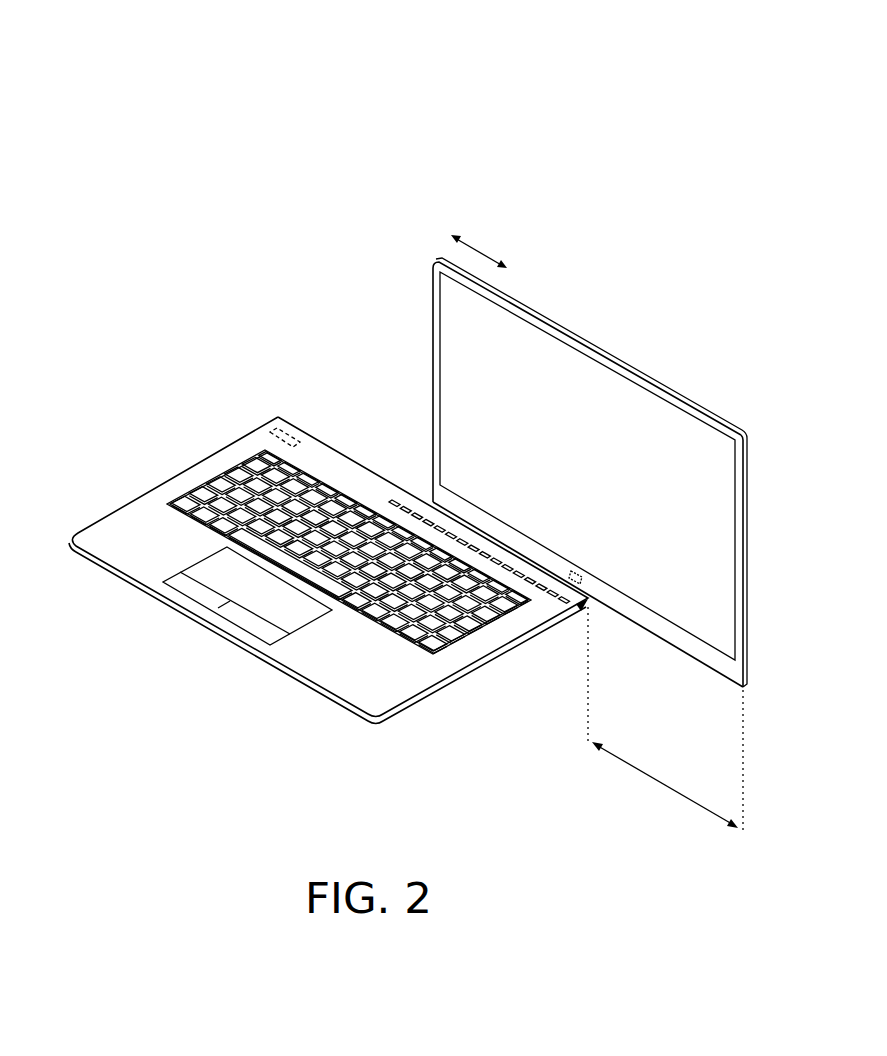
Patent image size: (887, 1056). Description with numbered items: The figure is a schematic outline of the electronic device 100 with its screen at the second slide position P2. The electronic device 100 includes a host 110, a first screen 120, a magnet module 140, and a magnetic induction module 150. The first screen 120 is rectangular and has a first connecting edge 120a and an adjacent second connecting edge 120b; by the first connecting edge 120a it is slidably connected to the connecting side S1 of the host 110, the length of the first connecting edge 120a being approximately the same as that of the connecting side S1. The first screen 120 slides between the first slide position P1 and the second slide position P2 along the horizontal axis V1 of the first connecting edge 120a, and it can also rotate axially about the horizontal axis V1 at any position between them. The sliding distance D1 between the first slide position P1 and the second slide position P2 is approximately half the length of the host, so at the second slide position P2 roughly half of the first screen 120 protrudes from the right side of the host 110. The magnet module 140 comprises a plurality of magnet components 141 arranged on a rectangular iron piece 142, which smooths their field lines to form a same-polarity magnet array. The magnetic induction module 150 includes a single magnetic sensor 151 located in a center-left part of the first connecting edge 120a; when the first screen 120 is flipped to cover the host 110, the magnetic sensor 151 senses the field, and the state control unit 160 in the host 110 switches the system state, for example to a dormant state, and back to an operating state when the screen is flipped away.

The electronic device 100 is at (47, 82).
The host 110 is at (307, 664).
The first screen 120 is at (688, 405).
The first connecting edge 120a is at (637, 640).
The second connecting edge 120b is at (425, 262).
The magnet module 140 is at (544, 683).
The magnet components 141 is at (501, 597).
The rectangular iron piece 142 is at (560, 606).
The magnetic induction module 150 is at (574, 571).
The magnetic sensor 151 is at (575, 577).
The state control unit 160 is at (270, 432).
The connecting side S1 is at (578, 612).
The horizontal axis V1 is at (479, 247).
The first slide position P1 is at (582, 689).
The second slide position P2 is at (744, 775).
The sliding distance D1 is at (665, 785).